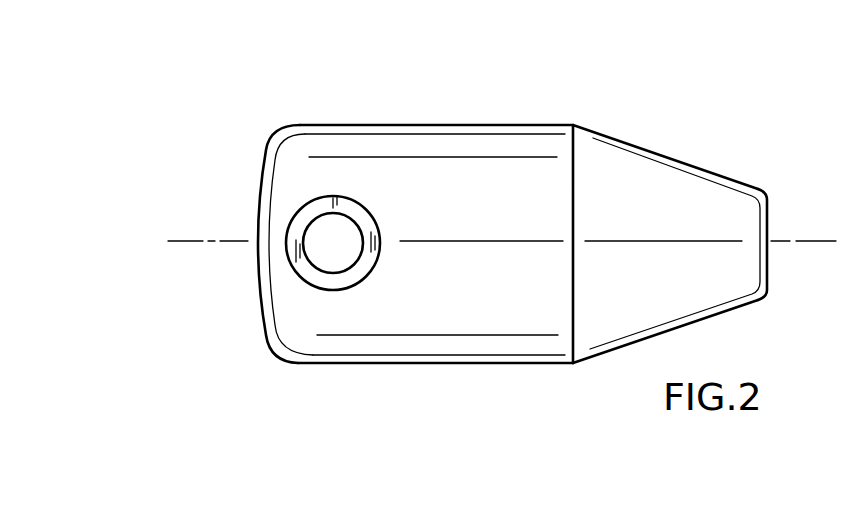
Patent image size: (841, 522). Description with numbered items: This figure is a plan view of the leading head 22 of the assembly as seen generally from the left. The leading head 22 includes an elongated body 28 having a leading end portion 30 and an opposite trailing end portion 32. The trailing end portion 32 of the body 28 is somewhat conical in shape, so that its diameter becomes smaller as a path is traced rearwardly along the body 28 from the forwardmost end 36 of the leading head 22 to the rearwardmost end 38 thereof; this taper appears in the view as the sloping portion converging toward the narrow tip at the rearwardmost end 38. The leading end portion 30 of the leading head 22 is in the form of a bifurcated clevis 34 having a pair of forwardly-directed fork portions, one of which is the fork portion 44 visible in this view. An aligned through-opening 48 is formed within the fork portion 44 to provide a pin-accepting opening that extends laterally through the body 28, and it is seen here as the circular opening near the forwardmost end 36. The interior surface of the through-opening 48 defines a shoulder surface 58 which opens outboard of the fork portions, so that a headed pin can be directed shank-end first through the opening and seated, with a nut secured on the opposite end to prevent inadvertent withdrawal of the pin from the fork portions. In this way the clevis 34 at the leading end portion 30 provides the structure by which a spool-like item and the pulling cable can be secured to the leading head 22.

The leading head 22 is at (525, 125).
The elongated body 28 is at (532, 364).
The leading end portion 30 is at (323, 124).
The trailing end portion 32 is at (666, 333).
The bifurcated clevis 34 is at (358, 124).
The forwardmost end 36 is at (256, 254).
The rearwardmost end 38 is at (767, 217).
The fork portion 44 is at (413, 345).
The through-opening 48 is at (318, 250).
The shoulder surface 58 is at (303, 222).